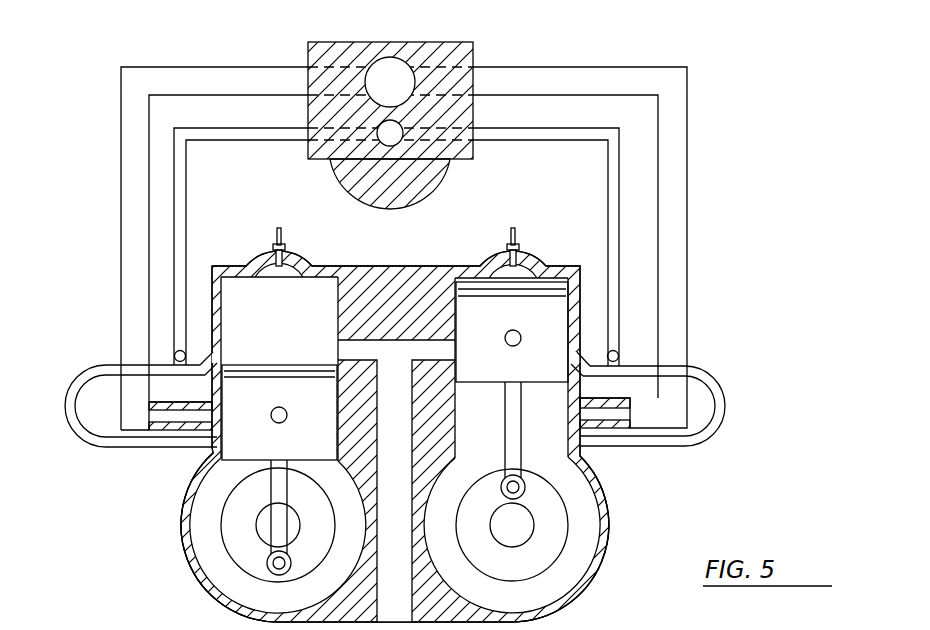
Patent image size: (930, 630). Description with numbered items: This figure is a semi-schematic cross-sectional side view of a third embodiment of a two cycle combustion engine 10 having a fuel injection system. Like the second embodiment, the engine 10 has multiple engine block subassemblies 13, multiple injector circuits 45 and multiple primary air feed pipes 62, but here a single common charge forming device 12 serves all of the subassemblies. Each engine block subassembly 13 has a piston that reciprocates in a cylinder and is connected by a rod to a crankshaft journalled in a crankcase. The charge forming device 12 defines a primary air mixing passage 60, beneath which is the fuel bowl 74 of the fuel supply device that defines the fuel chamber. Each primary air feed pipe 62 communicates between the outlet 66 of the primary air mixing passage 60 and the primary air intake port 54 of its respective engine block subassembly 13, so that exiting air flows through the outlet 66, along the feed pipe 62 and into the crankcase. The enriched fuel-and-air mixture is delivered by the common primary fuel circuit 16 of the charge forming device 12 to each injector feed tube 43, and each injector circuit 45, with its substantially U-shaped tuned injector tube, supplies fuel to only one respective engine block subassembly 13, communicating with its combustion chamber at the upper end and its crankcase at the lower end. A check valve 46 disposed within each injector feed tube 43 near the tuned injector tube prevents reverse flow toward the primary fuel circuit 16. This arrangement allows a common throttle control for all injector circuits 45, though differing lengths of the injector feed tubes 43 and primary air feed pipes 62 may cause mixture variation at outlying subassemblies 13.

The two cycle combustion engine 10 is at (730, 63).
The charge forming device 12 is at (399, 107).
The engine block subassembly 13 is at (181, 535).
The primary fuel circuit 16 is at (478, 117).
The injector feed tube 43 is at (188, 194).
The injector circuit 45 is at (66, 432).
The check valve 46 is at (174, 356).
The primary air intake port 54 is at (220, 413).
The primary air mixing passage 60 is at (380, 68).
The primary air feed pipe 62 is at (122, 190).
The outlet 66 is at (306, 80).
The fuel bowl 74 is at (433, 185).